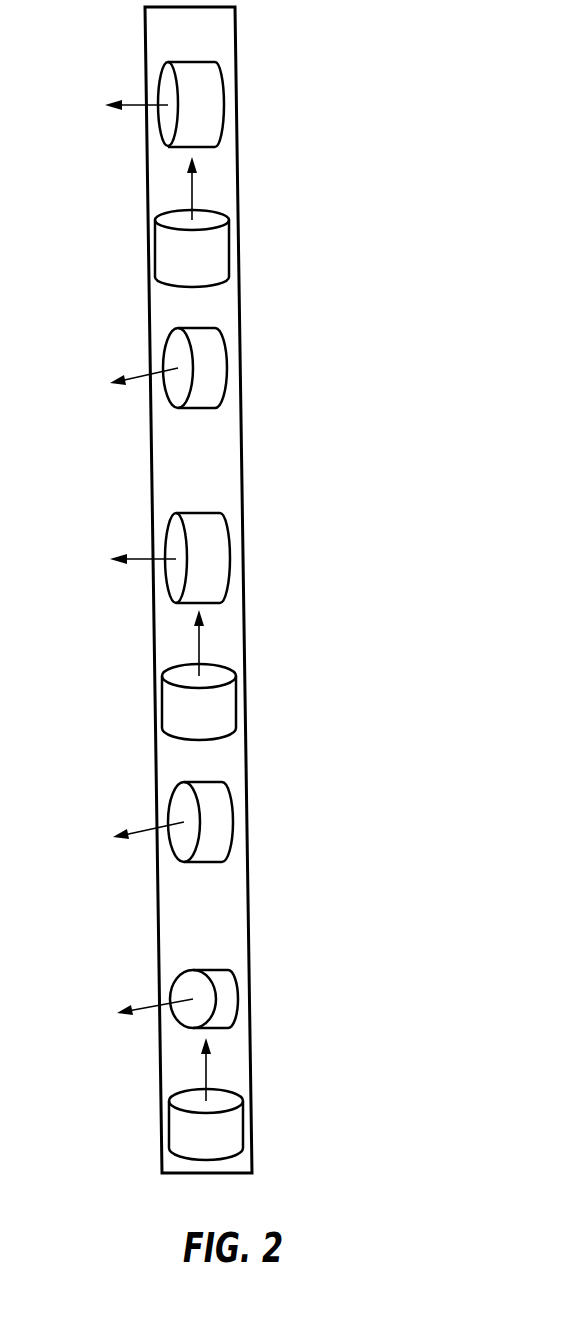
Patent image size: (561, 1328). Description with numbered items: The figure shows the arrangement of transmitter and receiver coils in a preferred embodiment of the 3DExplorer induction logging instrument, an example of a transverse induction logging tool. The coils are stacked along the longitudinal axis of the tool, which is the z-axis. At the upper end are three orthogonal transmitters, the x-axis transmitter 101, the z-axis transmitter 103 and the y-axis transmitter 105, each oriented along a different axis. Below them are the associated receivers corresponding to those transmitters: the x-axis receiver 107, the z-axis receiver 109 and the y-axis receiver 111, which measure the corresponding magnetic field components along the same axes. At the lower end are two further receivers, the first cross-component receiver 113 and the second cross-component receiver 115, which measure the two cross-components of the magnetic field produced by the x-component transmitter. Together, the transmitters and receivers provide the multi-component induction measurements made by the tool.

The Tx transmitter 101 is at (237, 89).
The Tz transmitter 103 is at (262, 222).
The Ty transmitter 105 is at (241, 348).
The Rx receiver 107 is at (241, 545).
The Rz receiver 109 is at (270, 675).
The Ry receiver 111 is at (246, 805).
The Rxy receiver 113 is at (260, 980).
The Rxz receiver 115 is at (287, 1099).